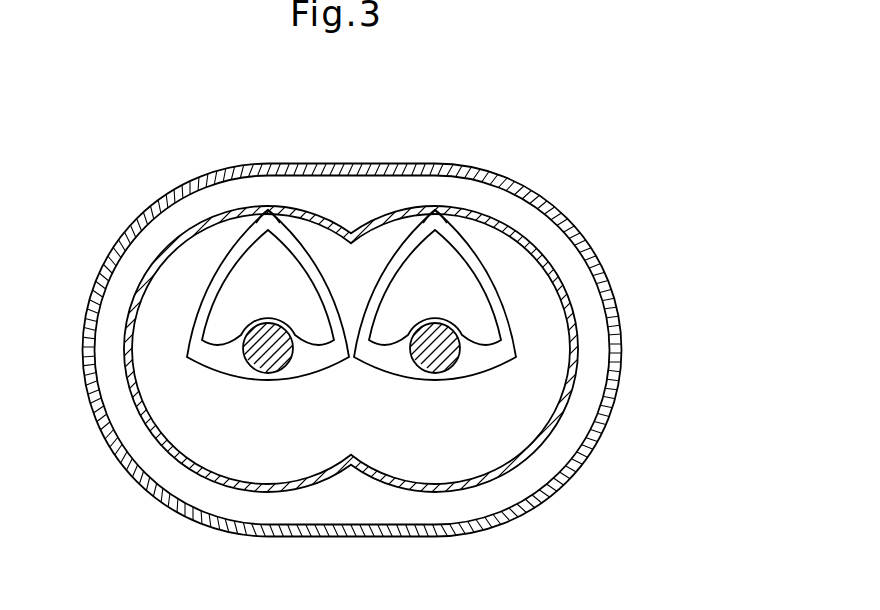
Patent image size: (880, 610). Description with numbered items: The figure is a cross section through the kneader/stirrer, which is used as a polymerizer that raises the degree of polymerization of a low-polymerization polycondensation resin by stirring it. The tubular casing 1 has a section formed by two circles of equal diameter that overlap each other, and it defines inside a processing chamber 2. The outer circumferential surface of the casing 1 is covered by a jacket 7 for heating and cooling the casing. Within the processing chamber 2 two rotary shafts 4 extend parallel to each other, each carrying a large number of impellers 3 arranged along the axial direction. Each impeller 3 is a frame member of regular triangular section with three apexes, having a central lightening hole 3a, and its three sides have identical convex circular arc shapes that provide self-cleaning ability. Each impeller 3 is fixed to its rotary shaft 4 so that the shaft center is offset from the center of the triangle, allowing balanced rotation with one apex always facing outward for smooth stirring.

The tubular casing 1 is at (98, 260).
The processing chamber 2 is at (547, 318).
The impeller 3 is at (287, 228).
The central lightening hole 3a is at (243, 256).
The rotary shaft 4 is at (268, 365).
The jacket 7 is at (83, 357).